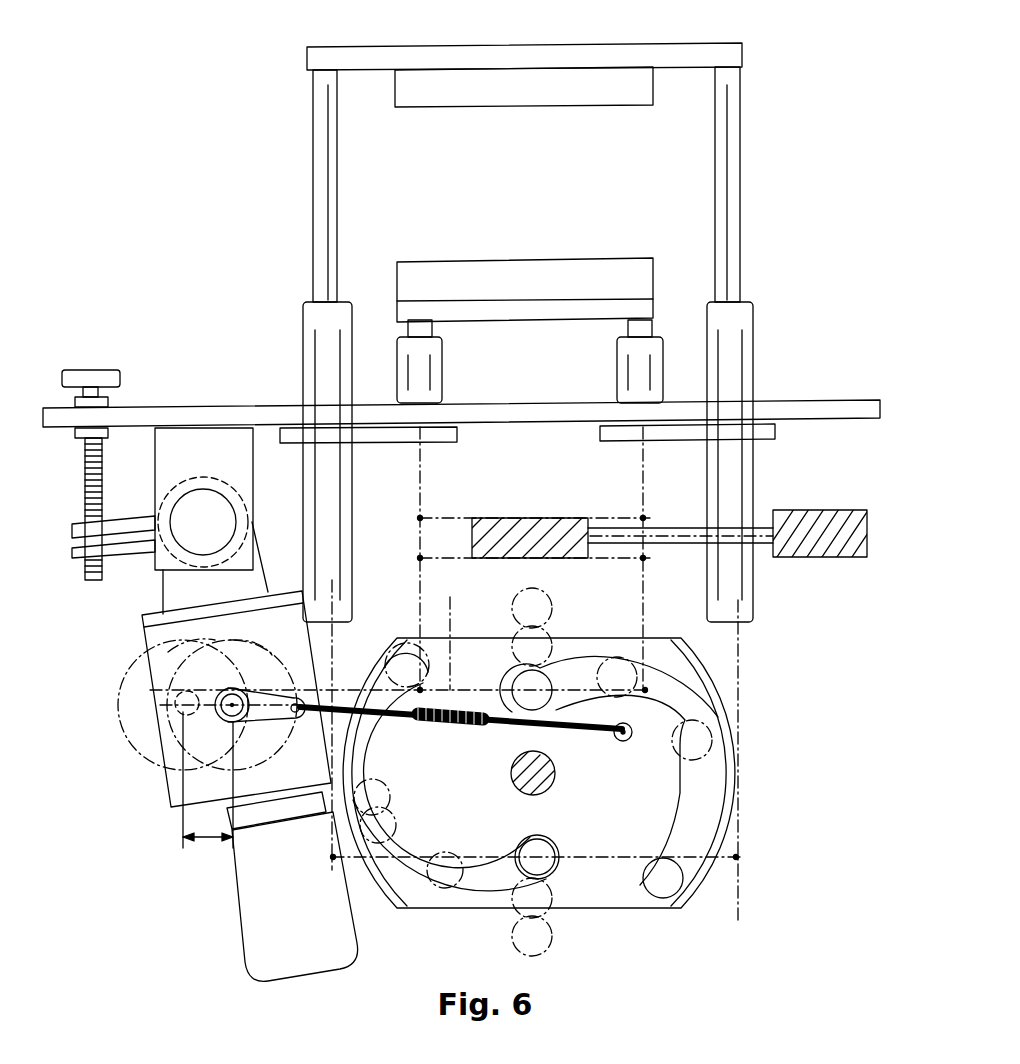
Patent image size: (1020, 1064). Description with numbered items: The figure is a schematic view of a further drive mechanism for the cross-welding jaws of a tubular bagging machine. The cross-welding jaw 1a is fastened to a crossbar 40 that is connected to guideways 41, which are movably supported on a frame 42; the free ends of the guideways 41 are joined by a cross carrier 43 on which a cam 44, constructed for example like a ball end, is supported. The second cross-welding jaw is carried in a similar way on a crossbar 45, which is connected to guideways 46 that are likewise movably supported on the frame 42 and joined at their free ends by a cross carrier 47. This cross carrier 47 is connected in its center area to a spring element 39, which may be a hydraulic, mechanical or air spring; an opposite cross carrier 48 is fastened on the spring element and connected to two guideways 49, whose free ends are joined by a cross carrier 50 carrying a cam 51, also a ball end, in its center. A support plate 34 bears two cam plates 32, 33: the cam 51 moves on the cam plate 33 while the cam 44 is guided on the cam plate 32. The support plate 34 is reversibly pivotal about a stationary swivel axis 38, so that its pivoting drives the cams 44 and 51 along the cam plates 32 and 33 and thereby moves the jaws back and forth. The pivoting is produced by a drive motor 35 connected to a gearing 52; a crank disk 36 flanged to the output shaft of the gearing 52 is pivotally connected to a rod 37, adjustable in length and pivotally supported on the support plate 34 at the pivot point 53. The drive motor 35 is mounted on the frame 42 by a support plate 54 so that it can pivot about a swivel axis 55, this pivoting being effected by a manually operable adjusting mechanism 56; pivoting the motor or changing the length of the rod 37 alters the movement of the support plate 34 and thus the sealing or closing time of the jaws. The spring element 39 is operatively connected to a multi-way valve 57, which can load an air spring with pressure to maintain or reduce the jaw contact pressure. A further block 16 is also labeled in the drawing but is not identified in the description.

The cross-welding jaw 1a is at (582, 76).
The crossbar 40 is at (675, 52).
The guideways 41 is at (321, 150).
The lower tool block 16 is at (627, 268).
The crossbar 45 is at (640, 308).
The frame 42 is at (822, 405).
The adjusting mechanism 56 is at (82, 520).
The swivel axis 55 is at (203, 522).
The support plate 54 is at (170, 595).
The crank disk 36 is at (208, 731).
The gearing 52 is at (173, 789).
The drive motor 35 is at (247, 893).
The cam plate 32 is at (413, 870).
The cam 44 is at (547, 843).
The swivel axis 38 is at (547, 793).
The cross carrier 43 is at (720, 895).
The cam plate 33 is at (700, 806).
The support plate 34 is at (680, 657).
The cam 51 is at (700, 698).
The pivot point 53 is at (660, 731).
The cross carrier 50 is at (450, 640).
The rod 37 is at (455, 735).
The spring element 39 is at (492, 520).
The guideways 46 is at (647, 473).
The cross carrier 47 is at (627, 503).
The cross carrier 48 is at (623, 580).
The guideways 49 is at (645, 628).
The multi-way valve 57 is at (840, 514).